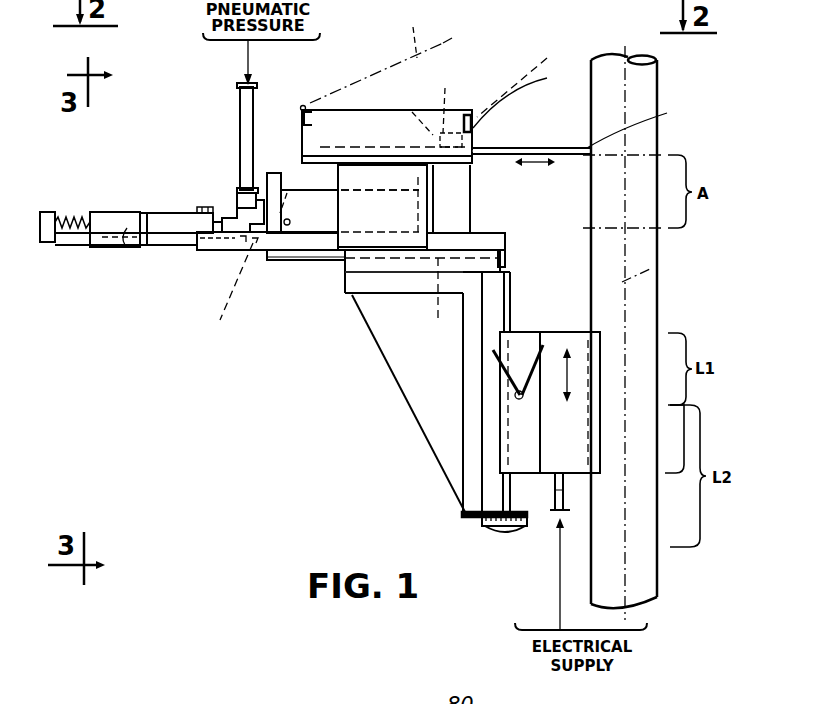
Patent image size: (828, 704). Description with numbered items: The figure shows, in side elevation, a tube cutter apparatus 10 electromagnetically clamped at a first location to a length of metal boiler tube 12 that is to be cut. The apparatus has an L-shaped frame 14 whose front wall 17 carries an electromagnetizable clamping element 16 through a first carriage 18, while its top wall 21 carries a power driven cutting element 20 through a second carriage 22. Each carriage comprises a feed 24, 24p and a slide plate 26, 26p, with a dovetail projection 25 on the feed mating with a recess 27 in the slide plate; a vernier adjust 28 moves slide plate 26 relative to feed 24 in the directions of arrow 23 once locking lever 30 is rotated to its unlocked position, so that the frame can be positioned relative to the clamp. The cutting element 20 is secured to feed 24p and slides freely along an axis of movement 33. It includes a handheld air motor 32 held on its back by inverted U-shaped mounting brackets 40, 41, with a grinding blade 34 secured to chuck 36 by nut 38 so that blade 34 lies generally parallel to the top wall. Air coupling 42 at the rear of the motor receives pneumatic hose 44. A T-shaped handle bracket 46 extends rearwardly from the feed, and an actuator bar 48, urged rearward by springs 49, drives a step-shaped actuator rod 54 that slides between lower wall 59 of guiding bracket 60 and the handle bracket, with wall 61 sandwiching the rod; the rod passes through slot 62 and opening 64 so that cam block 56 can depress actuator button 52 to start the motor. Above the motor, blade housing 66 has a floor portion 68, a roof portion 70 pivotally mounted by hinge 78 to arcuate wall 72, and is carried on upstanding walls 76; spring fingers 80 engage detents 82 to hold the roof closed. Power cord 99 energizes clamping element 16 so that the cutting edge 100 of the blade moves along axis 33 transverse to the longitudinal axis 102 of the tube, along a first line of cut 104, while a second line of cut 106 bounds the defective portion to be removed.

The tube cutter apparatus 10 is at (257, 431).
The boiler tube 12 is at (657, 290).
The L-shaped frame 14 is at (393, 337).
The electromagnetizable clamping element 16 is at (578, 442).
The front wall 17 is at (472, 408).
The first carriage 18 is at (494, 448).
The power driven cutting element 20 is at (515, 62).
The top wall 21 is at (373, 287).
The second carriage 22 is at (328, 270).
The arrow 23 is at (545, 368).
The feed 24 is at (510, 318).
The feed 24p is at (283, 260).
The dovetail projection 25 is at (315, 260).
The slide plate 26 is at (522, 333).
The slide plate 26p is at (483, 257).
The recess 27 is at (498, 337).
The vernier adjust 28 is at (525, 528).
The locking lever 30 is at (522, 385).
The air motor 32 is at (318, 185).
The axis of movement 33 is at (538, 150).
The grinding blade 34 is at (567, 150).
The chuck 36 is at (412, 112).
The nut 38 is at (447, 106).
The mounting bracket 40 is at (272, 173).
The mounting bracket 41 is at (382, 206).
The air coupling 42 is at (240, 200).
The pneumatic hose 44 is at (253, 95).
The handle bracket 46 is at (147, 200).
The actuator bar 48 is at (48, 212).
The springs 49 is at (73, 211).
The actuator button 52 is at (291, 221).
The actuator rod 54 is at (157, 247).
The cam block 56 is at (247, 227).
The lower wall 59 is at (97, 248).
The guiding bracket 60 is at (107, 204).
The wall 61 is at (122, 247).
The slot 62 is at (226, 302).
The opening 64 is at (309, 200).
The blade housing 66 is at (344, 100).
The floor portion 68 is at (455, 167).
The roof portion 70 is at (413, 29).
The arcuate wall 72 is at (300, 117).
The upstanding walls 76 is at (392, 187).
The hinge 78 is at (316, 106).
The spring fingers 80 is at (527, 94).
The detents 82 is at (525, 71).
The power cord 99 is at (567, 497).
The cutting edge 100 is at (653, 121).
The longitudinal axis 102 is at (650, 268).
The first line of cut 104 is at (648, 155).
The second line of cut 106 is at (643, 228).